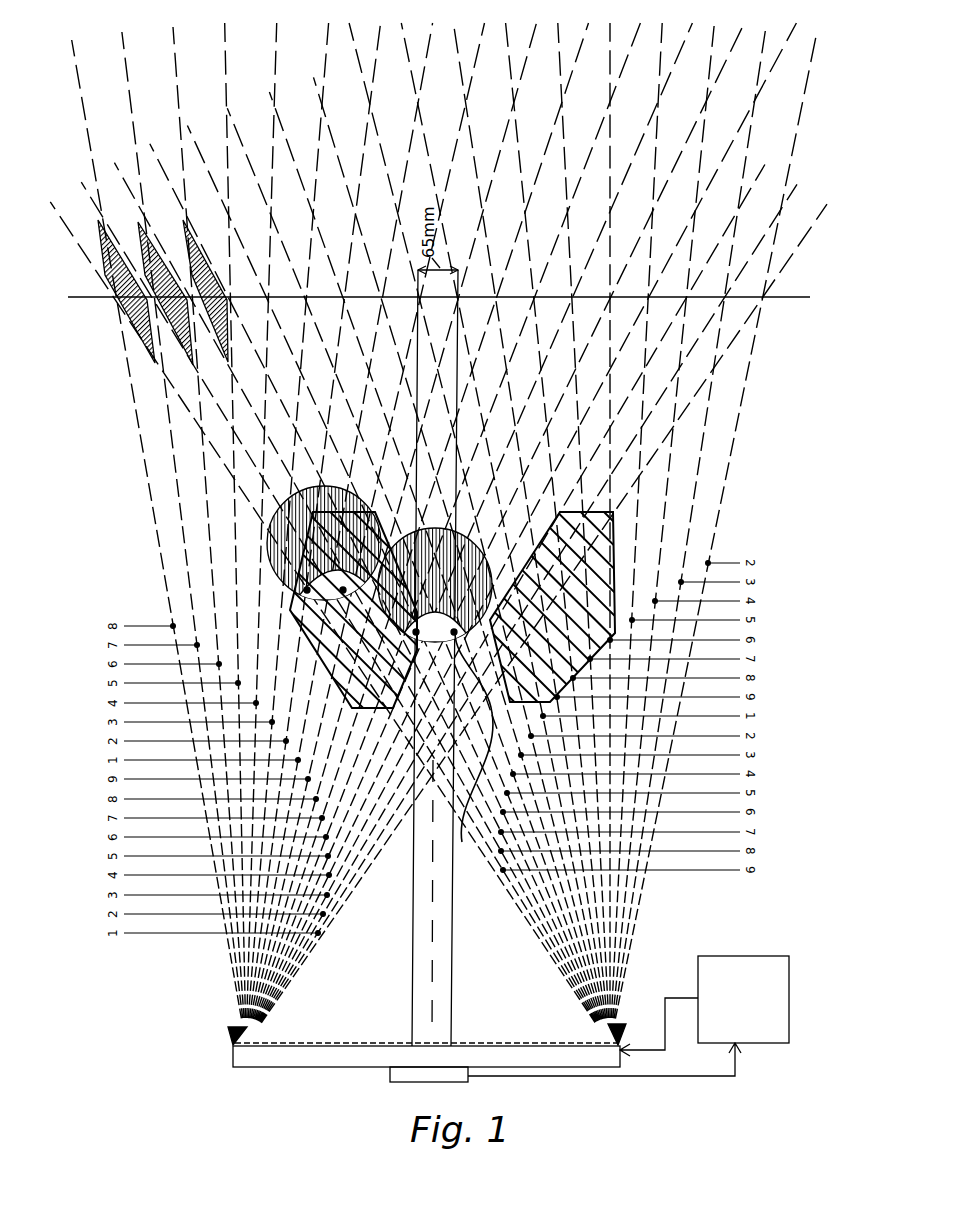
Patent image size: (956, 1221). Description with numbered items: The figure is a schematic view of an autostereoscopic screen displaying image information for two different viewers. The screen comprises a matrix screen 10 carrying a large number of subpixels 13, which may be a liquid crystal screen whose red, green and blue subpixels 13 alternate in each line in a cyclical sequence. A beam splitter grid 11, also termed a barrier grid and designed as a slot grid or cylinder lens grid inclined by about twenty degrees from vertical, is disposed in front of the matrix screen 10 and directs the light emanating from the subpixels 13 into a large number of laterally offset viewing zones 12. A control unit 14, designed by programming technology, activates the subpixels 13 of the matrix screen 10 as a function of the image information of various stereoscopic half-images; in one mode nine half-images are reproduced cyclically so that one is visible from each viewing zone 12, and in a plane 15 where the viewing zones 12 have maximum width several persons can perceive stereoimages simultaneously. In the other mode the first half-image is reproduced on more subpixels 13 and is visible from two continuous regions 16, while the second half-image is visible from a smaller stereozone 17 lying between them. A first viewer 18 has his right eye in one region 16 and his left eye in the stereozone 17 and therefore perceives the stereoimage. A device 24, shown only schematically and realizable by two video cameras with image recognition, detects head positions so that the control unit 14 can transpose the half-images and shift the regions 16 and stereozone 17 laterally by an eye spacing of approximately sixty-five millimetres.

The matrix screen 10 is at (233, 1053).
The beam splitter grid 11 is at (263, 1043).
The viewing zones 12 is at (158, 244).
The subpixels 13 is at (274, 521).
The control unit 14 is at (728, 956).
The plane 15 is at (799, 299).
The regions 16 is at (290, 610).
The stereozone 17 is at (474, 753).
The first viewer 18 is at (475, 543).
The device 24 is at (390, 1080).